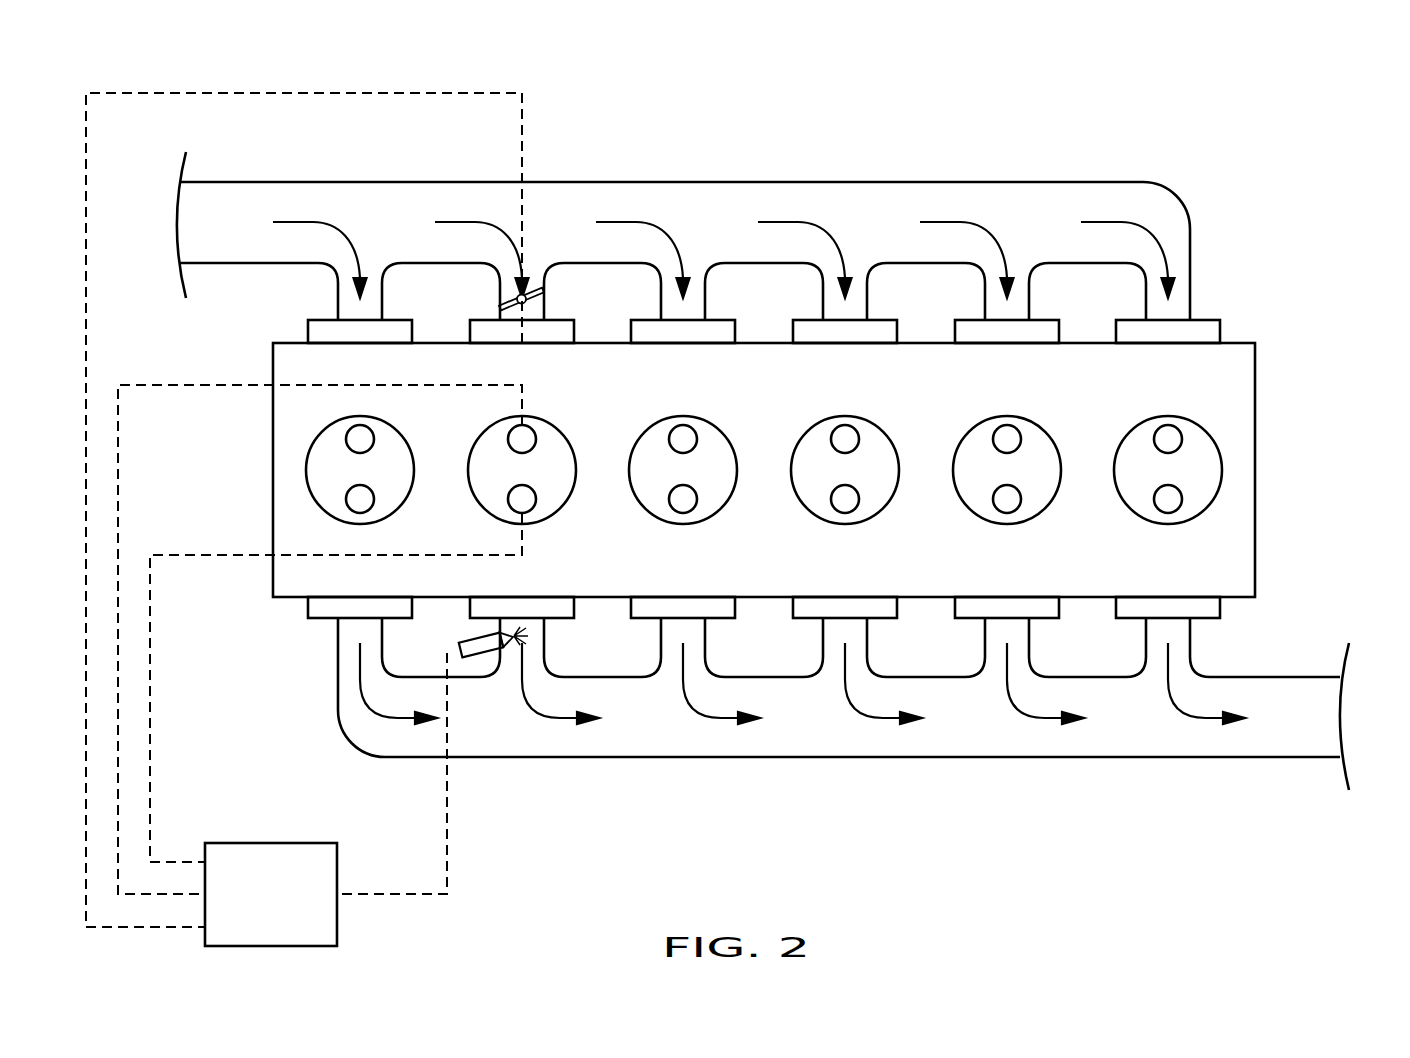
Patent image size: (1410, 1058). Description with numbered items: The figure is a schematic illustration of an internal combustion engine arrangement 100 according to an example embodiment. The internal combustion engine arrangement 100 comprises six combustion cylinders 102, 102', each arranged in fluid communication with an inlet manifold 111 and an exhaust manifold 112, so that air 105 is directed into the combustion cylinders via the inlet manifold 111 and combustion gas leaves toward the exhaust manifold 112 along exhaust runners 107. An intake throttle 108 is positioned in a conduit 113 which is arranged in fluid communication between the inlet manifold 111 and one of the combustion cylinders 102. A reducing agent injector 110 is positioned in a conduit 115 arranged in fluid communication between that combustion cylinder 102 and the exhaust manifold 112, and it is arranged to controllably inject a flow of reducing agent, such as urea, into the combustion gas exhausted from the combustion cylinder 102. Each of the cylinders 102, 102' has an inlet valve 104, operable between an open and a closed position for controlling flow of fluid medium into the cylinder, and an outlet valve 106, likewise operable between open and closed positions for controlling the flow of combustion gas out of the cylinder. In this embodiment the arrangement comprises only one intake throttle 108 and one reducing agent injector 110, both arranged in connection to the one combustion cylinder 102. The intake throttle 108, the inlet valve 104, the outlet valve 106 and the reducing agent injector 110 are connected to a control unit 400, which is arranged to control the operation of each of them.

The internal combustion engine arrangement 100 is at (1290, 100).
The combustion cylinder 102 is at (549, 460).
The combustion cylinders 102' is at (818, 460).
The inlet valve 104 is at (534, 431).
The air 105 is at (303, 222).
The outlet valve 106 is at (534, 511).
The exhaust runner flow 107 is at (362, 705).
The intake throttle 108 is at (523, 293).
The reducing agent injector 110 is at (447, 653).
The inlet manifold 111 is at (1183, 197).
The exhaust manifold 112 is at (1253, 677).
The conduit 113 is at (503, 307).
The conduit 115 is at (498, 625).
The control unit 400 is at (266, 843).